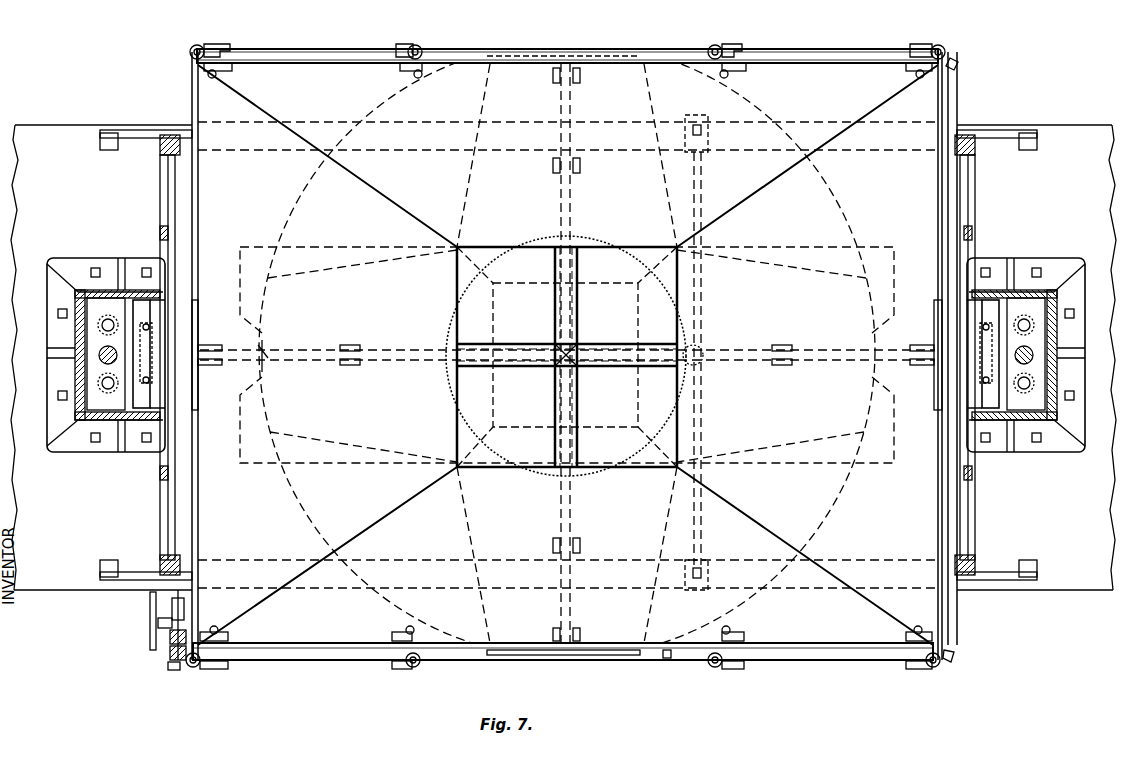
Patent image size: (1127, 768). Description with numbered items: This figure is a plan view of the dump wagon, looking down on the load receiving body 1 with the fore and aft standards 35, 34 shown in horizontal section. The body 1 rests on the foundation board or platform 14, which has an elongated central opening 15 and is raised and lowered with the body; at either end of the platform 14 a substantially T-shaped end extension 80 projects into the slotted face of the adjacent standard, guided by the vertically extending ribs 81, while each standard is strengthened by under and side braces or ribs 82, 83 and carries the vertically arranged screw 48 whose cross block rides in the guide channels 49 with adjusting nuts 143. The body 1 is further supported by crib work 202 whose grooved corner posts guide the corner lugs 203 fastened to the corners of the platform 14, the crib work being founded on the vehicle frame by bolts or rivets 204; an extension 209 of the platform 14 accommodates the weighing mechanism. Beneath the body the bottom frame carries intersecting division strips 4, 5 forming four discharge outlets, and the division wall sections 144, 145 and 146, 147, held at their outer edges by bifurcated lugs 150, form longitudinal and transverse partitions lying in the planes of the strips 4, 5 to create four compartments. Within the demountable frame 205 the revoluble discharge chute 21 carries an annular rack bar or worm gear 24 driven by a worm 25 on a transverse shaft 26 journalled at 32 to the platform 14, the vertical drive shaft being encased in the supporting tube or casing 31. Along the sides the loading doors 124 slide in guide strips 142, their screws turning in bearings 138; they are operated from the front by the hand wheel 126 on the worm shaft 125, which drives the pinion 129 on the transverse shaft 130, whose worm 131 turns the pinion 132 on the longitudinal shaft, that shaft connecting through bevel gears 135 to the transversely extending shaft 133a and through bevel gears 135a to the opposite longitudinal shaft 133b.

The load receiving body 1 is at (384, 184).
The division strip 4 is at (515, 372).
The division strip 5 is at (578, 448).
The foundation board or platform 14 is at (160, 500).
The elongated central opening 15 is at (358, 476).
The revoluble discharge chute 21 is at (542, 656).
The annular rack bar or worm gear 24 is at (586, 476).
The worm 25 is at (702, 350).
The transverse shaft 26 is at (700, 528).
The supporting tube or casing 31 is at (692, 668).
The journal 32 is at (708, 132).
The aft standard 34 is at (1064, 402).
The forward standard 35 is at (71, 404).
The screw 48 is at (96, 356).
The guide channels 49 is at (132, 270).
The end extension 80 is at (168, 370).
The vertically extending ribs 81 is at (156, 306).
The under braces or ribs 82 is at (106, 256).
The side braces or ribs 83 is at (50, 260).
The side loading doors 124 is at (324, 54).
The worm shaft 125 is at (158, 626).
The hand wheel 126 is at (150, 614).
The pinion 129 is at (170, 638).
The transverse shaft 130 is at (180, 602).
The worm 131 is at (170, 654).
The pinion 132 is at (170, 672).
The transversely extending shaft 133a is at (955, 94).
The longitudinal shaft 133b is at (574, 52).
The bevel gears 135 is at (956, 664).
The bevel gears 135a is at (960, 55).
The bearings 138 is at (202, 46).
The guide strips 142 is at (216, 52).
The nuts 143 is at (213, 76).
The vertical section 144 is at (326, 346).
The vertical section 145 is at (844, 354).
The vertical section 146 is at (569, 510).
The vertical section 147 is at (572, 184).
The bifurcated lugs 150 is at (580, 74).
The crib work 202 is at (108, 130).
The corner lugs 203 is at (160, 148).
The bolts or rivets 204 is at (100, 140).
The demountable frame 205 is at (498, 404).
The extension 209 is at (266, 370).